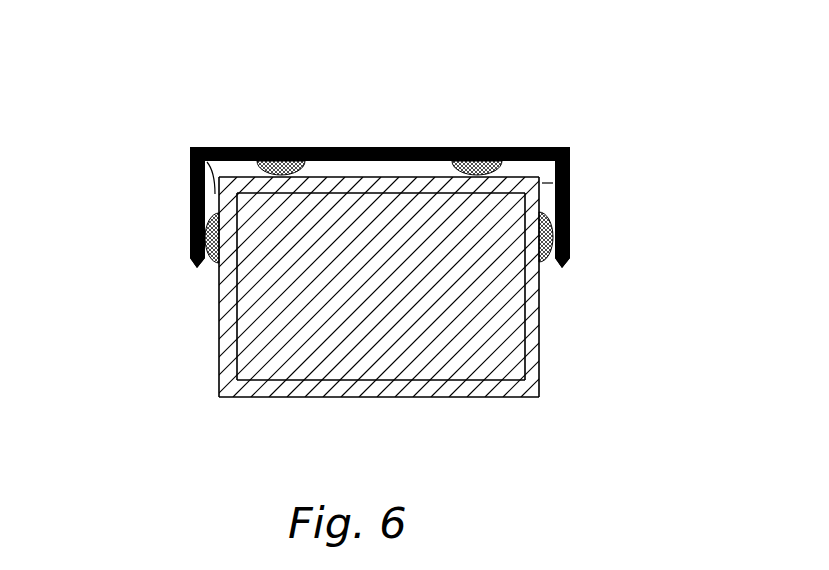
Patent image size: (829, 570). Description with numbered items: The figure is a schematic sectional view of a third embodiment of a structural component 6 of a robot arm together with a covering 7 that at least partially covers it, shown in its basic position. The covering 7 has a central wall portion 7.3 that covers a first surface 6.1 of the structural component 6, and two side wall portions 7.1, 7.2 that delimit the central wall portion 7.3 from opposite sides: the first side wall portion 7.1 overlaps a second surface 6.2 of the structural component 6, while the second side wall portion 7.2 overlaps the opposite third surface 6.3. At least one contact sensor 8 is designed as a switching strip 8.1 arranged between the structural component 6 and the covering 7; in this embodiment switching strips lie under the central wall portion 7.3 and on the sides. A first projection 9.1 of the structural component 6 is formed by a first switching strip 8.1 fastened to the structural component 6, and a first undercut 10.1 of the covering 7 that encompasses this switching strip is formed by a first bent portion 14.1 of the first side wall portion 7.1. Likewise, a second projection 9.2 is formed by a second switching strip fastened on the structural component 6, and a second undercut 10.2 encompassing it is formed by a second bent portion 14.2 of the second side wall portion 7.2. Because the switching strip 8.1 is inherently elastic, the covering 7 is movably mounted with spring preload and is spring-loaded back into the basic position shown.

The structural component 6 is at (379, 290).
The first surface 6.1 is at (510, 172).
The second surface 6.2 is at (220, 340).
The third surface 6.3 is at (540, 337).
The covering 7 is at (363, 158).
The first side wall portion 7.1 is at (121, 229).
The second side wall portion 7.2 is at (622, 225).
The central wall portion 7.3 is at (418, 147).
The contact sensor 8 is at (276, 147).
The switching strip 8.1 is at (480, 147).
The first projection 9.1 is at (215, 262).
The second projection 9.2 is at (545, 265).
The first undercut 10.1 is at (192, 147).
The second undercut 10.2 is at (548, 185).
The first bent portion 14.1 is at (205, 265).
The second bent portion 14.2 is at (620, 267).